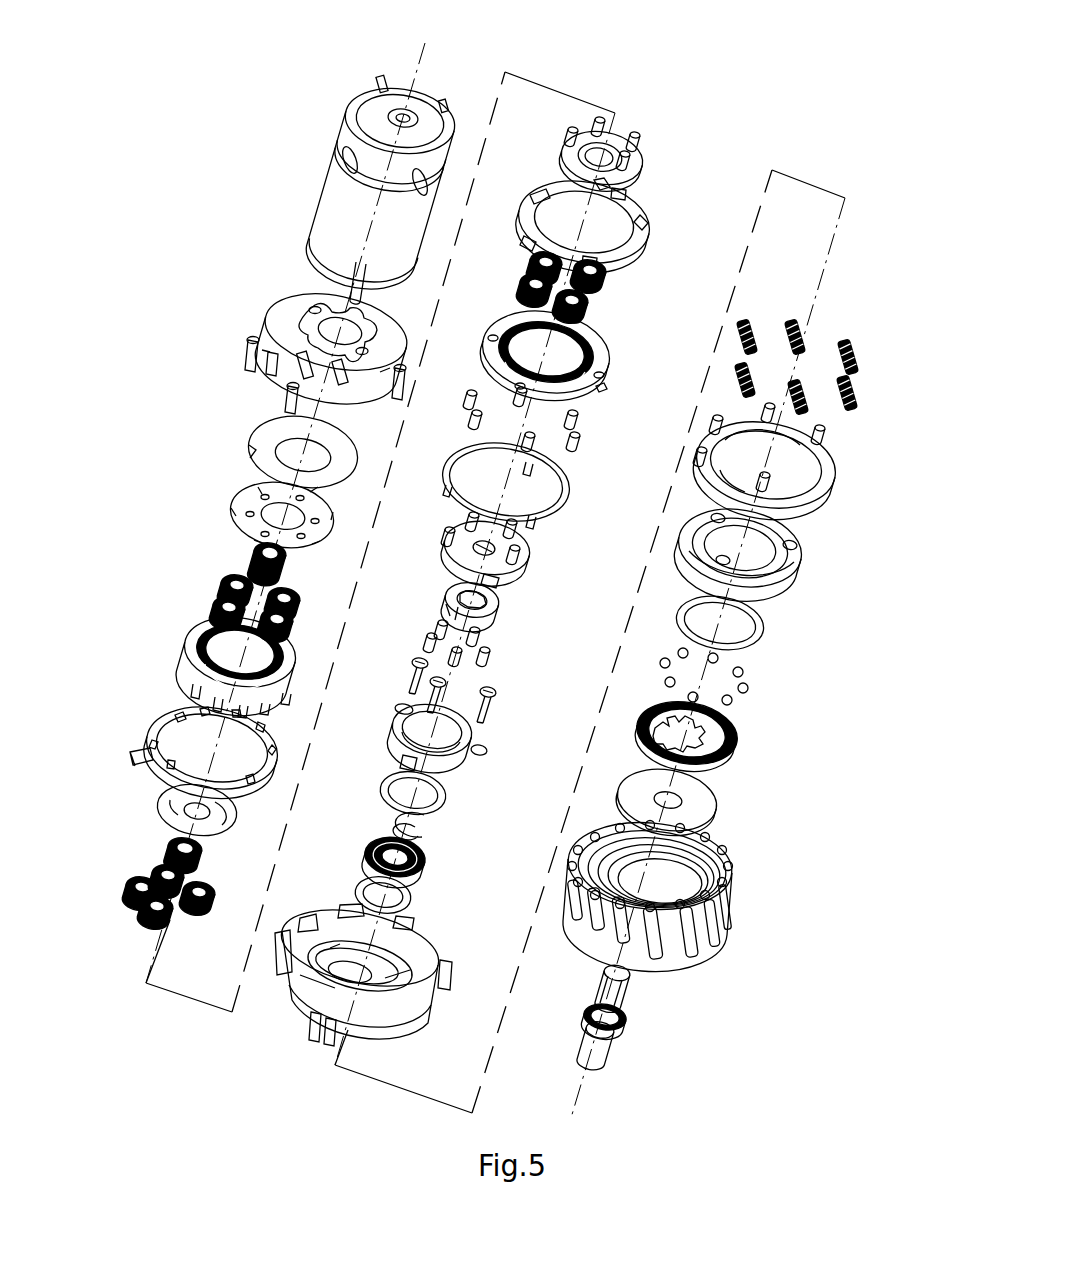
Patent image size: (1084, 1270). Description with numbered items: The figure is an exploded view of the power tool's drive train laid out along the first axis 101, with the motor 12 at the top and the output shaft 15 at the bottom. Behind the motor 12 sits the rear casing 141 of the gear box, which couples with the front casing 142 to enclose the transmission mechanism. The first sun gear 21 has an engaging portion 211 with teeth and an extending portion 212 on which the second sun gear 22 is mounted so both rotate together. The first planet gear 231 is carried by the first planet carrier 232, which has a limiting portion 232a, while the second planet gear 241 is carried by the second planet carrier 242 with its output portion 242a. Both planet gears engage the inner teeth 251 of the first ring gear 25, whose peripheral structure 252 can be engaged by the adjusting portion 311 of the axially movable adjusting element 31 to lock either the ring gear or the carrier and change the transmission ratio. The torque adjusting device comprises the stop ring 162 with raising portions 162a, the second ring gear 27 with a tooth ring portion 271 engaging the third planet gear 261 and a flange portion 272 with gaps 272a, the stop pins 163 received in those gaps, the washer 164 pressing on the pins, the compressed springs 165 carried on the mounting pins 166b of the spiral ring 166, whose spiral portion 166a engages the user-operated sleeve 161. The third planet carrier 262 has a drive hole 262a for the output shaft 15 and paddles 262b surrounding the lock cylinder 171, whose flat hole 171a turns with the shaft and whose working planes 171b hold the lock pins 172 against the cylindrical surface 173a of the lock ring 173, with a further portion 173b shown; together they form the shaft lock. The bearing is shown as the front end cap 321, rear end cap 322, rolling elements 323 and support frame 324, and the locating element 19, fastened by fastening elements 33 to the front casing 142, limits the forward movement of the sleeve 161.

The first axis 101 is at (410, 60).
The motor 12 is at (330, 193).
The rear casing 141 is at (268, 320).
The limiting portion 232a is at (250, 492).
The first planet carrier 232 is at (258, 506).
The first sun gear 21 is at (217, 539).
The engaging portion 211 is at (266, 553).
The extending portion 212 is at (258, 570).
The first planet gear 231 is at (222, 594).
The inner teeth 251 is at (210, 640).
The first ring gear 25 is at (206, 660).
The peripheral structure 252 is at (195, 656).
The adjusting portion 311 is at (170, 730).
The adjusting element 31 is at (189, 739).
The second sun gear 22 is at (170, 845).
The second planet gear 241 is at (132, 886).
The second planet carrier 242 is at (634, 154).
The output portion 242a is at (610, 184).
The stop ring 162 is at (591, 222).
The raising portions 162a is at (535, 240).
The third planet gear 261 is at (600, 290).
The tooth ring portion 271 is at (515, 318).
The second ring gear 27 is at (573, 340).
The flange portion 272 is at (610, 357).
The gaps 272a is at (608, 378).
The stop pins 163 is at (588, 443).
The washer 164 is at (572, 490).
The third planet carrier 262 is at (505, 541).
The drive hole 262a is at (498, 550).
The paddles 262b is at (500, 582).
The flat hole 171a is at (458, 592).
The working planes 171b is at (448, 610).
The lock cylinder 171 is at (471, 596).
The lock pins 172 is at (492, 656).
The fastening elements 33 is at (498, 698).
The cylindrical surface 173a is at (398, 710).
The lug 173b is at (392, 744).
The lock ring 173 is at (432, 731).
The front casing 142 is at (400, 1013).
The compressed springs 165 is at (856, 374).
The mounting pins 166b is at (822, 445).
The spiral portion 166a is at (834, 470).
The spiral ring 166 is at (804, 460).
The locating element 19 is at (800, 580).
The rear end cap 322 is at (760, 630).
The rolling elements 323 is at (748, 688).
The support frame 324 is at (740, 755).
The front end cap 321 is at (700, 815).
The sleeve 161 is at (720, 925).
The output shaft 15 is at (614, 1050).